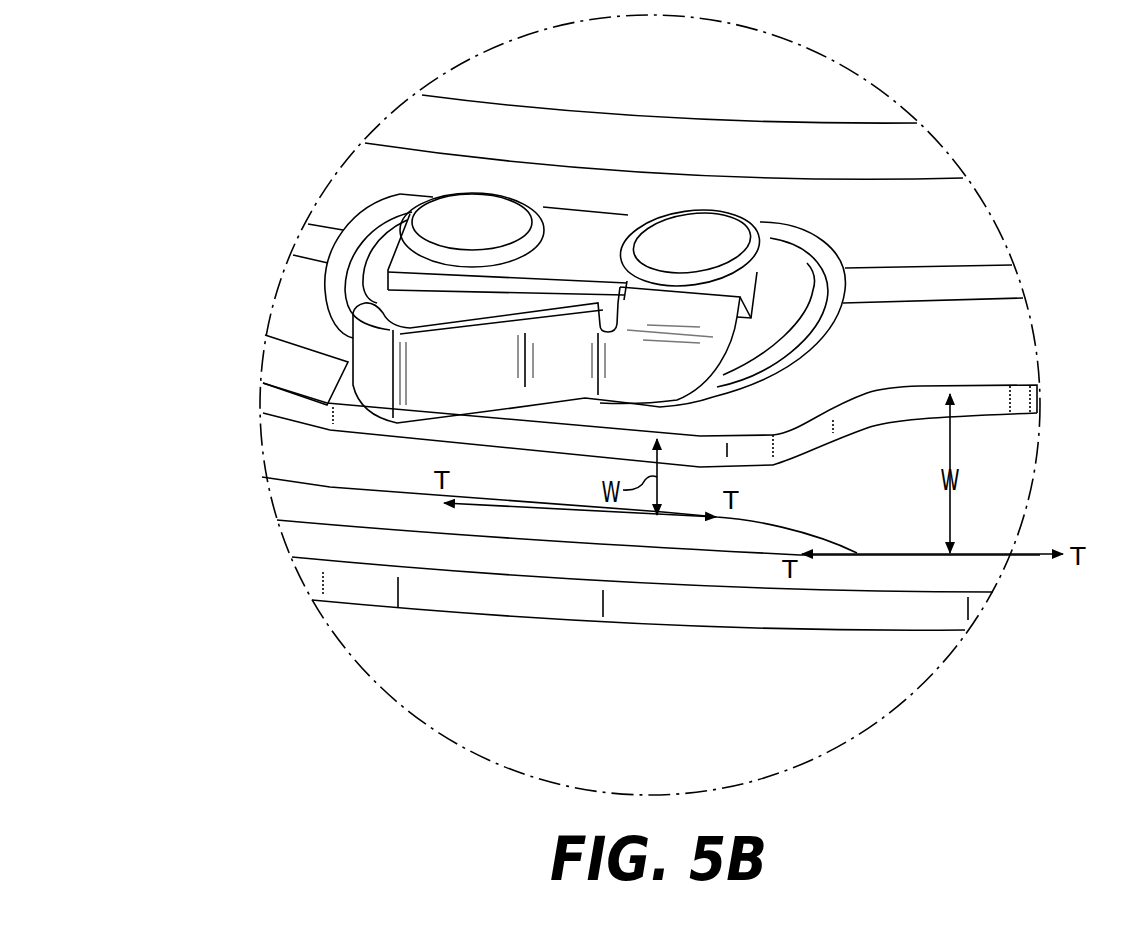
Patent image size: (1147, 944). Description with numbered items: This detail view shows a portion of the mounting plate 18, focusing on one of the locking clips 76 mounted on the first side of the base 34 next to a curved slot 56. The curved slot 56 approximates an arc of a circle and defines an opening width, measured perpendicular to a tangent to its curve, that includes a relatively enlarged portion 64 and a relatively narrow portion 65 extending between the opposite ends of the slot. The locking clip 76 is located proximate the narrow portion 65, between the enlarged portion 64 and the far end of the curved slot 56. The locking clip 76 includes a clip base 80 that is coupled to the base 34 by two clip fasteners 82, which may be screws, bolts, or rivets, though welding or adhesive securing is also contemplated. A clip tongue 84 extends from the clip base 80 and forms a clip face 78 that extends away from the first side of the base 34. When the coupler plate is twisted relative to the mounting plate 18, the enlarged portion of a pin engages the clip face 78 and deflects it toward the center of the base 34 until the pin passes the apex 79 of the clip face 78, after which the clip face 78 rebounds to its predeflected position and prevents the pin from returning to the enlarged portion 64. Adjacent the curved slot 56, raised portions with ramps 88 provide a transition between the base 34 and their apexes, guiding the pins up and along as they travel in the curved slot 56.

The mounting plate 18 is at (1018, 140).
The base 34 is at (755, 118).
The curved slot 56 is at (823, 482).
The enlarged portion 64 is at (995, 447).
The narrow portion 65 is at (320, 457).
The locking clip 76 is at (578, 206).
The clip face 78 is at (480, 382).
The apex 79 is at (353, 360).
The clip base 80 is at (565, 261).
The clip fasteners 82 is at (472, 210).
The clip tongue 84 is at (638, 367).
The ramps 88 is at (283, 367).